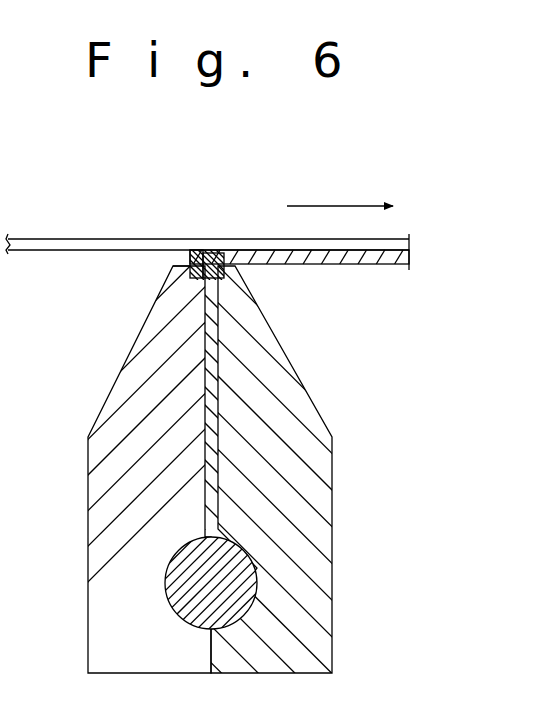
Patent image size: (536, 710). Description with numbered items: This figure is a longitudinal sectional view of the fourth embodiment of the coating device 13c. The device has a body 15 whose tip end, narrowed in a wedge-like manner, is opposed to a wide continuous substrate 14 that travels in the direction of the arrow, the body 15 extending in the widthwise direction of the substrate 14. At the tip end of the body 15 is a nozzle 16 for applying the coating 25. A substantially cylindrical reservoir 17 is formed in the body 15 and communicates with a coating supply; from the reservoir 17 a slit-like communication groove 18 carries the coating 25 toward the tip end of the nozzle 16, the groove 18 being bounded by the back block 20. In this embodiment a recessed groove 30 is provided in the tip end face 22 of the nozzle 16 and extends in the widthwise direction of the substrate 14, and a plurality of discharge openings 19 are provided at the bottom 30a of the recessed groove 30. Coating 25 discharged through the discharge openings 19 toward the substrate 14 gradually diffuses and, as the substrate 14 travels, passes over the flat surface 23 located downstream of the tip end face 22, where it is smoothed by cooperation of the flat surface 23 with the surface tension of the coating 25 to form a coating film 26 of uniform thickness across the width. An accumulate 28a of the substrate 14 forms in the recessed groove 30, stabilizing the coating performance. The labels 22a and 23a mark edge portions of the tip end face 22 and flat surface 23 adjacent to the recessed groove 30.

The coating device 13c is at (346, 431).
The substrate 14 is at (69, 236).
The body 15 is at (334, 559).
The nozzle 16 is at (117, 374).
The reservoir 17 is at (257, 577).
The communication groove 18 is at (218, 506).
The discharge openings 19 is at (350, 351).
The back block 20 is at (118, 495).
The tip end face 22 is at (199, 262).
The needle tip 22a is at (222, 258).
The flat surface 23 is at (247, 262).
The plate edge 23a is at (226, 272).
The coating 25 is at (196, 582).
The coating film 26 is at (383, 265).
The accumulate 28a is at (214, 258).
The recessed groove 30 is at (198, 256).
The bottom 30a is at (190, 268).